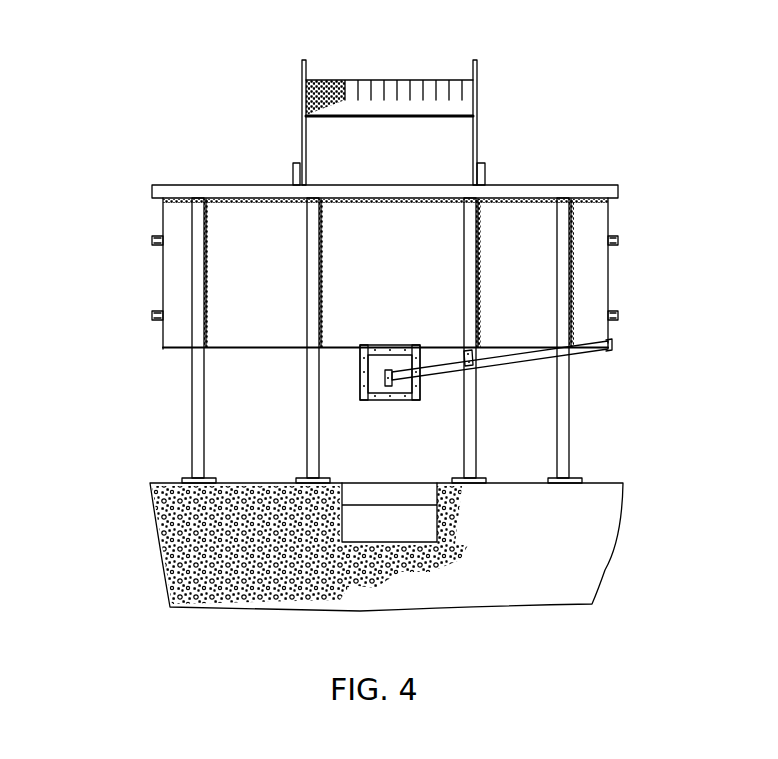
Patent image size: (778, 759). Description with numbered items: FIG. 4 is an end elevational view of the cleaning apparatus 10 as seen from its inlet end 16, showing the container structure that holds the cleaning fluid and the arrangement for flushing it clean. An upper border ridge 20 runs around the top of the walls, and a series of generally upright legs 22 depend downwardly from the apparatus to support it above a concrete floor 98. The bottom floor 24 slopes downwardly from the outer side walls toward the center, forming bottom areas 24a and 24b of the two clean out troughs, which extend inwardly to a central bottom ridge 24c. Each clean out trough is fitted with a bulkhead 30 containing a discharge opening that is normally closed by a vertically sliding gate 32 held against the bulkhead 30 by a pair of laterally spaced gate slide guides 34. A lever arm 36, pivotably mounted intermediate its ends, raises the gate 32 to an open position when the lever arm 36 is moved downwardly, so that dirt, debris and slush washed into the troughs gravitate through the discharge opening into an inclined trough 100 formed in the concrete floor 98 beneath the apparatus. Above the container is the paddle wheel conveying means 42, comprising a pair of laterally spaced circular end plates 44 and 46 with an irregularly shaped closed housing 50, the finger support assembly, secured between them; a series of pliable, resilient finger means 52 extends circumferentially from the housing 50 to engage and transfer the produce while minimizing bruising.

The cleaning apparatus 10 is at (552, 76).
The inlet end 16 is at (535, 212).
The upper border ridge 20 is at (265, 187).
The legs 22 is at (358, 405).
The bottom floor 24 is at (347, 408).
The bottom area 24a is at (360, 393).
The bottom area 24b is at (422, 362).
The bottom ridge 24c is at (390, 392).
The bulkhead 30 is at (262, 362).
The gate 32 is at (360, 363).
The gate slide guides 34 is at (355, 425).
The lever arm 36 is at (606, 343).
The paddle wheel conveying means 42 is at (290, 80).
The circular end plate 44 is at (300, 150).
The circular end plate 46 is at (478, 131).
The closed housing 50 is at (455, 158).
The finger means 52 is at (436, 69).
The concrete floor 98 is at (595, 520).
The trough 100 is at (408, 530).